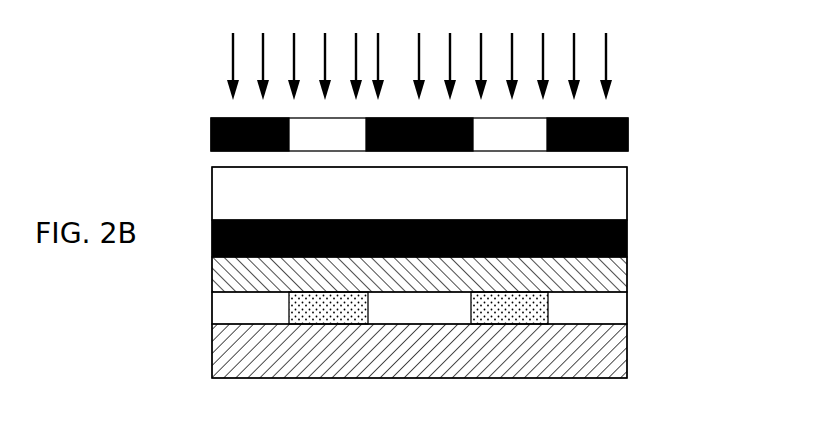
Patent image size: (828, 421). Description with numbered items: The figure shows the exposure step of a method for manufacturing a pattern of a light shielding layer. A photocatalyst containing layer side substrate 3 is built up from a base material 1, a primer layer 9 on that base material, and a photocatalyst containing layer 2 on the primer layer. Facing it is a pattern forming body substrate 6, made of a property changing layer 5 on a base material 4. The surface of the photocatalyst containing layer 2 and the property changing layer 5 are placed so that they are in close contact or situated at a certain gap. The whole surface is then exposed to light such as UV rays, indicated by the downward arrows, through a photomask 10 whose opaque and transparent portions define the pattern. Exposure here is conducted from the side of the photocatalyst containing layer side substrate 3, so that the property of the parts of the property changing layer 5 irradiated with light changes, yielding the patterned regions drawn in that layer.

The photomask 10 is at (628, 127).
The base material 1 is at (616, 184).
The primer layer 9 is at (627, 224).
The photocatalyst containing layer 2 is at (627, 268).
The photocatalyst containing layer side substrate 3 is at (708, 178).
The property changing layer 5 is at (611, 313).
The base material 4 is at (627, 356).
The pattern forming body substrate 6 is at (708, 322).